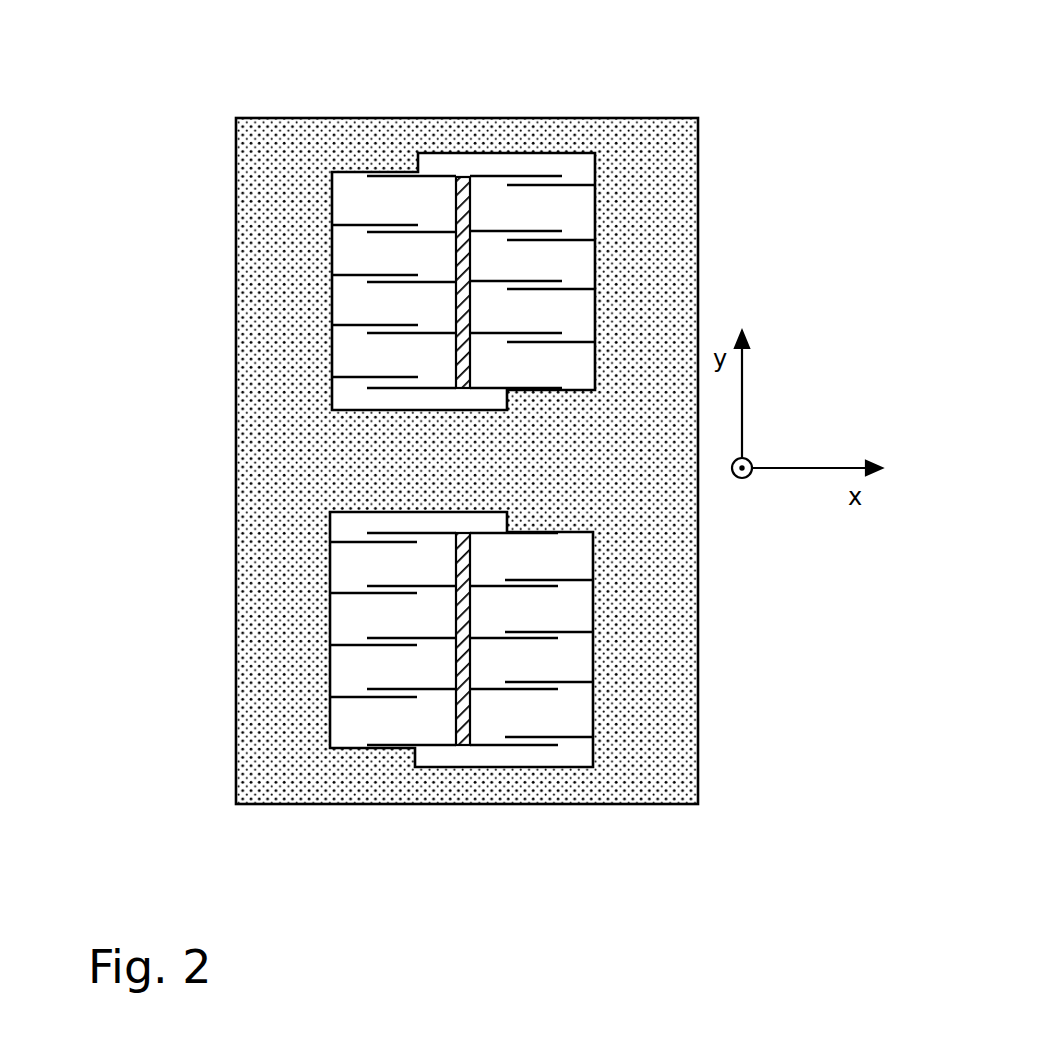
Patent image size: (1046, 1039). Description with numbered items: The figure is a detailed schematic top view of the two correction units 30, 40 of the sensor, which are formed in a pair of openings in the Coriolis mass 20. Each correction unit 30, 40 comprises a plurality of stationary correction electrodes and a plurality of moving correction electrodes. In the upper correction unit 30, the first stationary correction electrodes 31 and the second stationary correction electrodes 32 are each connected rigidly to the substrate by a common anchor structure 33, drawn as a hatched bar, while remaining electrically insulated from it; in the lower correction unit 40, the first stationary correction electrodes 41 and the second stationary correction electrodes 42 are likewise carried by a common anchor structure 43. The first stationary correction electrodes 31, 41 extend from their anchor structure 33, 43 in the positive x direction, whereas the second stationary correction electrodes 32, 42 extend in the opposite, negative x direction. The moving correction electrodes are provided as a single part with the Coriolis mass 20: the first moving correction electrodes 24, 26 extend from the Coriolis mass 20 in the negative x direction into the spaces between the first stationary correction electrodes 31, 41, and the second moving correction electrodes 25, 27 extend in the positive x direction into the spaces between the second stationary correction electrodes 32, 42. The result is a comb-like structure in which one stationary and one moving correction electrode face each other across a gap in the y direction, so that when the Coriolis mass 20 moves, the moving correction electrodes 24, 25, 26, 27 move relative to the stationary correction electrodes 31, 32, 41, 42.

The Coriolis mass 20 is at (650, 118).
The correction unit 30 is at (103, 122).
The correction unit 40 is at (100, 510).
The anchor structure 33 is at (462, 177).
The anchor structure 43 is at (457, 745).
The first stationary correction electrodes 31 is at (490, 230).
The first moving correction electrodes 24 is at (490, 280).
The second stationary correction electrodes 32 is at (435, 231).
The second moving correction electrodes 25 is at (350, 226).
The second moving correction electrodes 27 is at (393, 542).
The second stationary correction electrodes 42 is at (433, 638).
The first moving correction electrodes 26 is at (560, 580).
The first stationary correction electrodes 41 is at (525, 639).